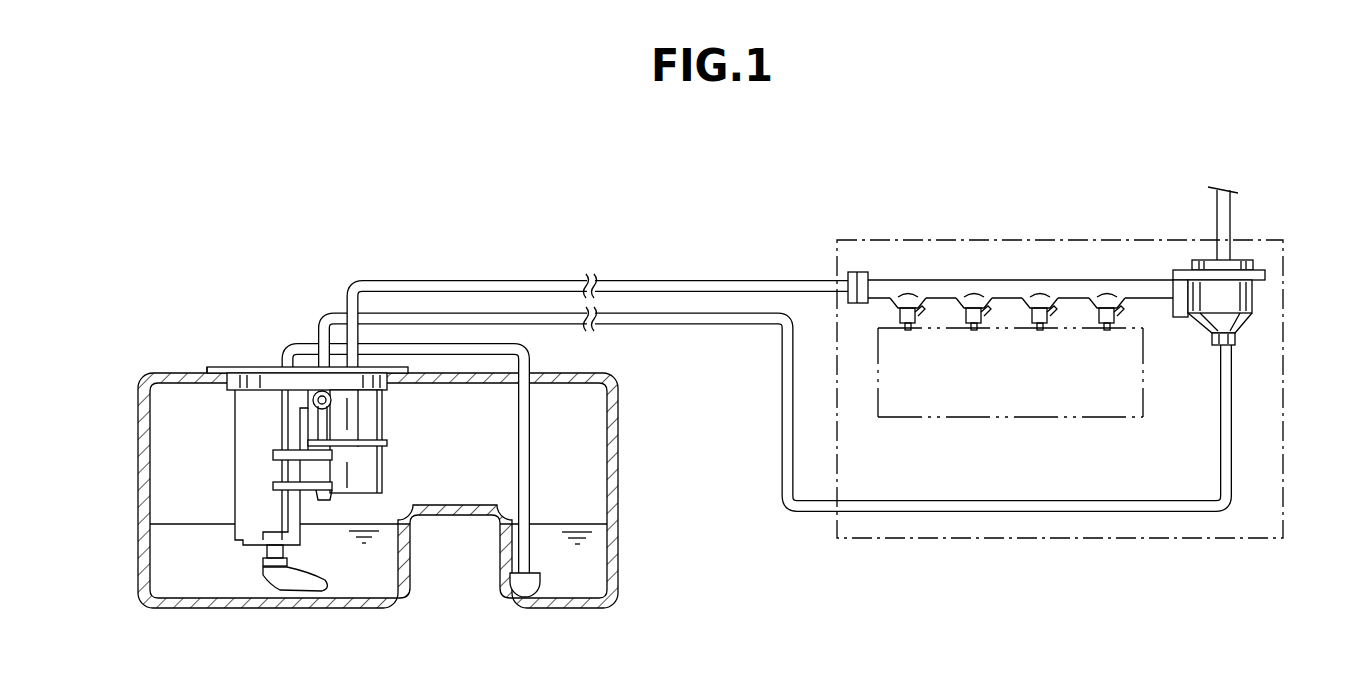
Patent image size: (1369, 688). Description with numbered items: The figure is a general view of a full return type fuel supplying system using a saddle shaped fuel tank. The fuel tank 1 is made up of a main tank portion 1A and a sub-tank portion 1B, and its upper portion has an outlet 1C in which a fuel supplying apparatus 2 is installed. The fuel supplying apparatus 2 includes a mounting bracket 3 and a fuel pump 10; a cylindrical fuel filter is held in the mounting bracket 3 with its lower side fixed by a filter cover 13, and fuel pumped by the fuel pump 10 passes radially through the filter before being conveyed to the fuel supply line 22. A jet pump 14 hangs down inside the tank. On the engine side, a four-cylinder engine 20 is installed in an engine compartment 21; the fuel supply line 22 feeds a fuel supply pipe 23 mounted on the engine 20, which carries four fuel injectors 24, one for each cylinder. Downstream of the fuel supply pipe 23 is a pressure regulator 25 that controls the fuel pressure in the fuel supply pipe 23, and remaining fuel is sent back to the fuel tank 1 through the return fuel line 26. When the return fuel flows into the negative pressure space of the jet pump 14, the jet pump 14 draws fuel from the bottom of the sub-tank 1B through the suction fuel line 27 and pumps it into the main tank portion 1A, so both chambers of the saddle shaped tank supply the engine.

The fuel tank 1 is at (143, 464).
The main tank portion 1A is at (201, 574).
The sub-tank portion 1B is at (563, 566).
The outlet 1C is at (230, 375).
The fuel supplying apparatus 2 is at (250, 367).
The mounting bracket 3 is at (218, 410).
The fuel pump 10 is at (304, 538).
The filter cover 13 is at (378, 493).
The jet pump 14 is at (282, 468).
The four-cylinder engine 20 is at (1040, 420).
The engine compartment 21 is at (1150, 540).
The fuel supply line 22 is at (692, 280).
The fuel supply pipe 23 is at (978, 280).
The fuel injectors 24 is at (909, 308).
The pressure regulator 25 is at (1243, 297).
The return fuel line 26 is at (905, 508).
The suction fuel line 27 is at (523, 437).